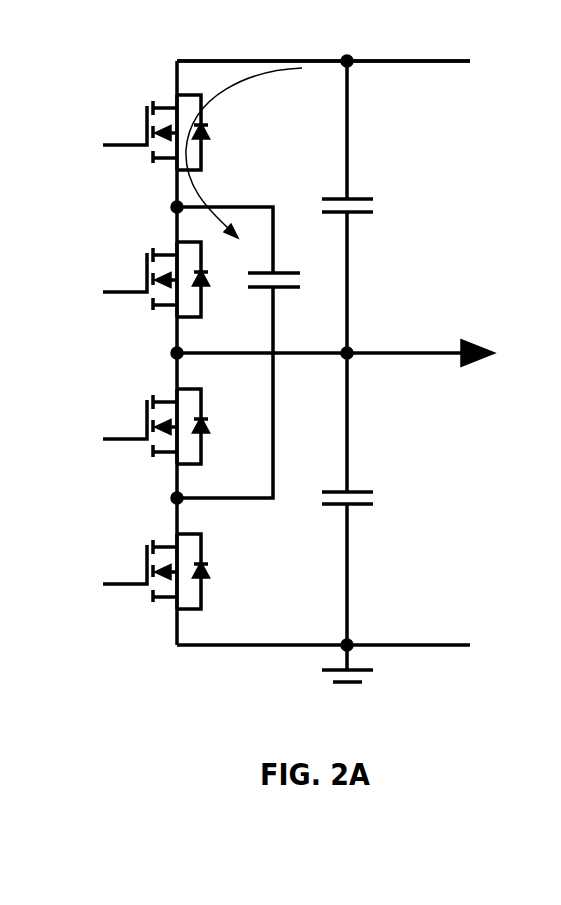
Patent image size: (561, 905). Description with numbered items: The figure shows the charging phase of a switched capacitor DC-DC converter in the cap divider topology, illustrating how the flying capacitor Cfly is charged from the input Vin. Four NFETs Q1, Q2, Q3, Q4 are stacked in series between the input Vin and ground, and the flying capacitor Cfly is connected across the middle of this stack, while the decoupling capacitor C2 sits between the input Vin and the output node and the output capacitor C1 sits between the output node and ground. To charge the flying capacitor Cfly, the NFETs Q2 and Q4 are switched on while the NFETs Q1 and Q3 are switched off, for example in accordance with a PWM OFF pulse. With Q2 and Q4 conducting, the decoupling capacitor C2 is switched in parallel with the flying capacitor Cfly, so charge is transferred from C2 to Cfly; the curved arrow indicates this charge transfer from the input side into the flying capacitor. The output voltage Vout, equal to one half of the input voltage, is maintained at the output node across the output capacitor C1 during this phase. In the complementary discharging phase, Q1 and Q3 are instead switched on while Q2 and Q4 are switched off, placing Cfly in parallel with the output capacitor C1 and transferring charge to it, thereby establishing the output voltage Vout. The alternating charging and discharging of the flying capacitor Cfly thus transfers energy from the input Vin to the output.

The NFET Q1 is at (150, 571).
The NFET Q2 is at (150, 426).
The NFET Q3 is at (150, 279).
The NFET Q4 is at (150, 132).
The output capacitor C1 is at (368, 501).
The decoupling capacitor C2 is at (369, 208).
The flying capacitor Cfly is at (256, 352).
The input Vin is at (323, 81).
The output voltage Vout is at (346, 368).